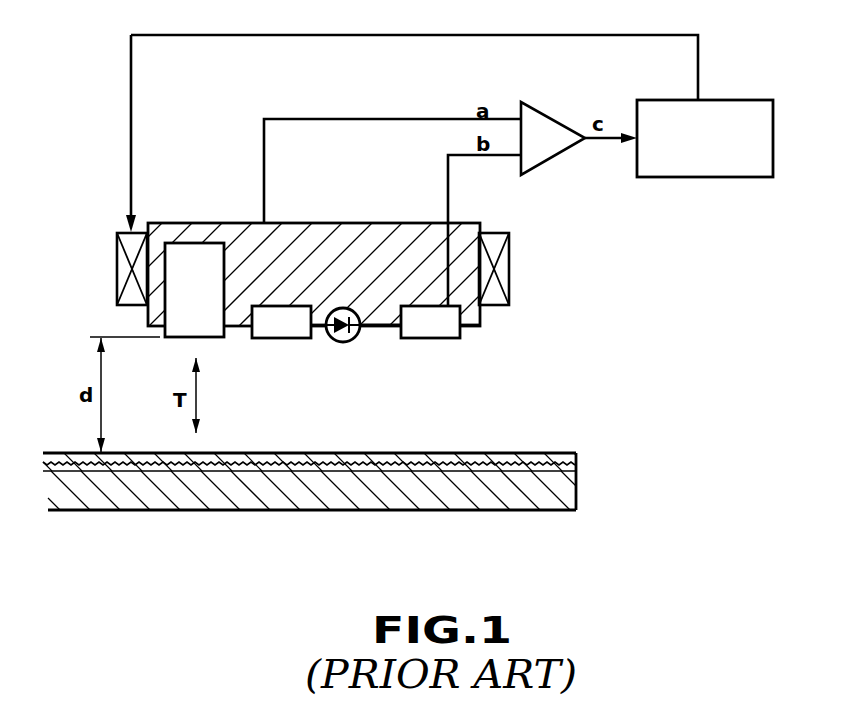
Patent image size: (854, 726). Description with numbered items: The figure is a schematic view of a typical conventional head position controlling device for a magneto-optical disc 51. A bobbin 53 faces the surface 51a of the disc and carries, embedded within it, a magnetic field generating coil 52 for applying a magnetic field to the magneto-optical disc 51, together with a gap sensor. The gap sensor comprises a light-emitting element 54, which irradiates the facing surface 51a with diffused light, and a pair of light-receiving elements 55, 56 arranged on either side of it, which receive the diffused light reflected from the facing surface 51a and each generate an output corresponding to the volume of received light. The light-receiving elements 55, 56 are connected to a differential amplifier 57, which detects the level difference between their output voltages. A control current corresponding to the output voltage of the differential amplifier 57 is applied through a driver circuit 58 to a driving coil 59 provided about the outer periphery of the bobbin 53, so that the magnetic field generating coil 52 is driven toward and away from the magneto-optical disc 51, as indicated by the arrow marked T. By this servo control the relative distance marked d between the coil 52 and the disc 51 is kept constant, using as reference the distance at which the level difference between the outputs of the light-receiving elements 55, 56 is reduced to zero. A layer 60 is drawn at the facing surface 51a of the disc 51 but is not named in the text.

The magneto-optical disc 51 is at (565, 492).
The surface of the magneto-optical disc 51a is at (545, 458).
The magnetic field generating coil 52 is at (190, 340).
The bobbin 53 is at (238, 228).
The light-emitting element 54 is at (343, 343).
The light-receiving element 55 is at (290, 339).
The light-receiving element 56 is at (440, 339).
The differential amplifier 57 is at (551, 118).
The driver circuit 58 is at (738, 100).
The driving coil 59 is at (118, 262).
The recording layer 60 is at (473, 466).